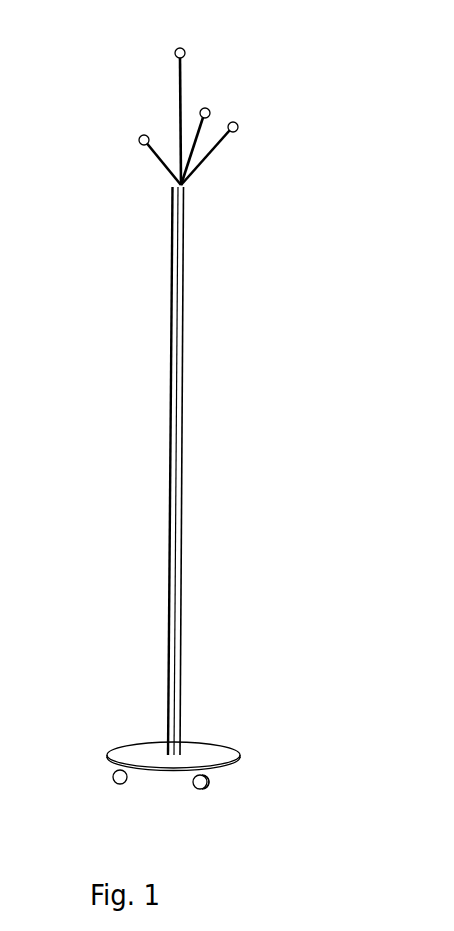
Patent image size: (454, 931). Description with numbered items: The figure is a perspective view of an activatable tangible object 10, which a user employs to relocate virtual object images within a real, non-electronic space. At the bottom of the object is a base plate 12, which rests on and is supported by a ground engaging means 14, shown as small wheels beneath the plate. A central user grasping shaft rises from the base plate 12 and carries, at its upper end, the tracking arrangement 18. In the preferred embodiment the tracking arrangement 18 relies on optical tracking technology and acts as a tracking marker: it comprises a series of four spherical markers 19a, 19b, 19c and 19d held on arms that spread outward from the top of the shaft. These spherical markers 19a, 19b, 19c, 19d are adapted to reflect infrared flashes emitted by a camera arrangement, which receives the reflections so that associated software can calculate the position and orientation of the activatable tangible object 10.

The activatable tangible object 10 is at (221, 241).
The base plate 12 is at (138, 755).
The ground engaging means 14 is at (210, 783).
The tracking arrangement 18 is at (224, 94).
The spherical marker 19a is at (139, 140).
The spherical marker 19b is at (185, 52).
The spherical marker 19c is at (209, 110).
The spherical marker 19d is at (238, 126).